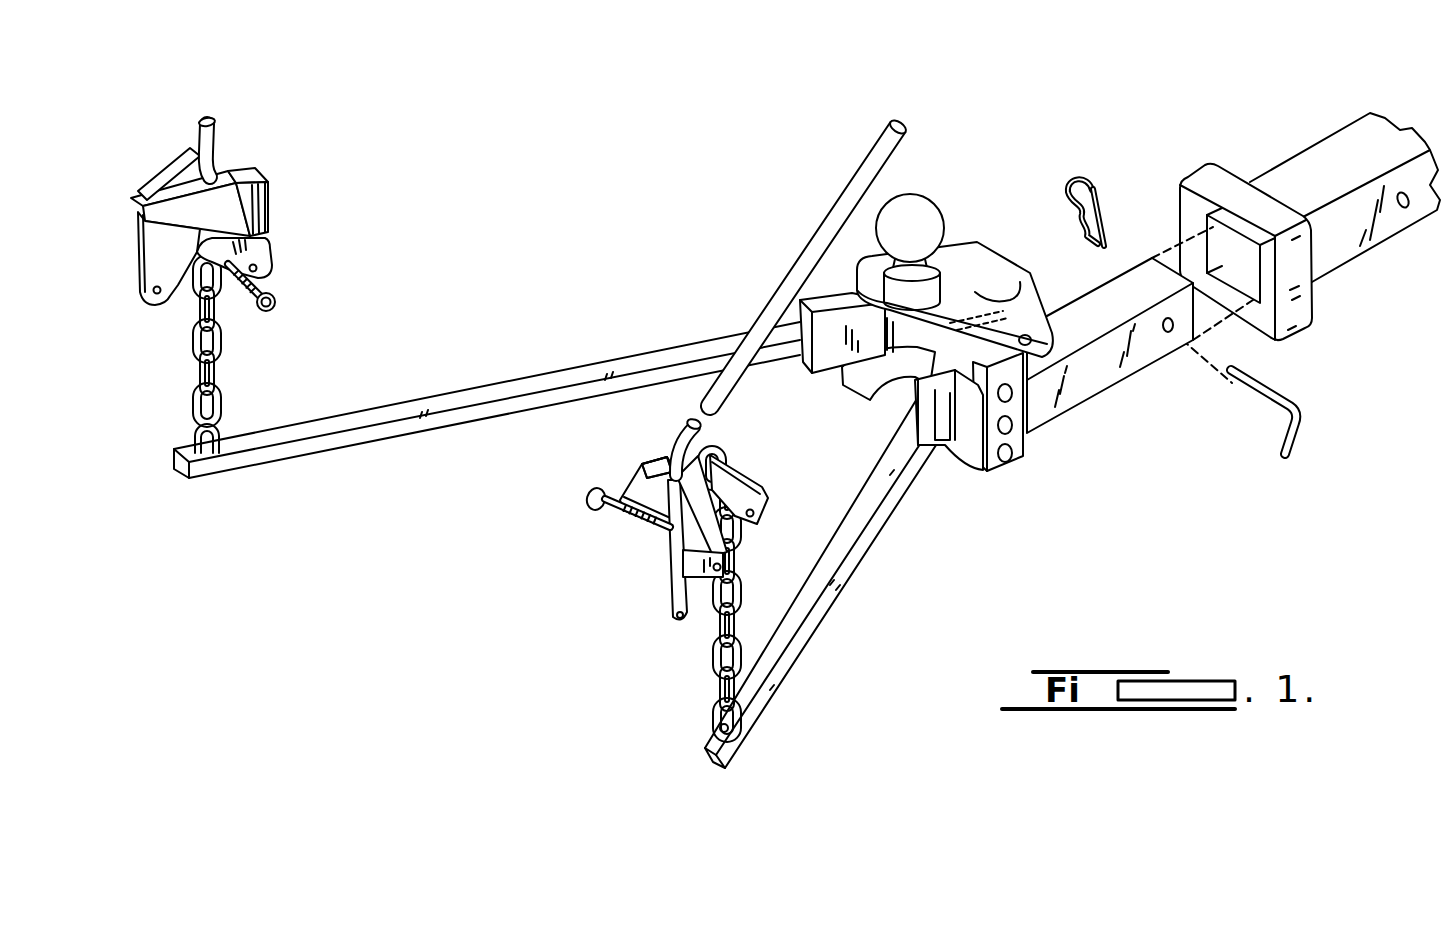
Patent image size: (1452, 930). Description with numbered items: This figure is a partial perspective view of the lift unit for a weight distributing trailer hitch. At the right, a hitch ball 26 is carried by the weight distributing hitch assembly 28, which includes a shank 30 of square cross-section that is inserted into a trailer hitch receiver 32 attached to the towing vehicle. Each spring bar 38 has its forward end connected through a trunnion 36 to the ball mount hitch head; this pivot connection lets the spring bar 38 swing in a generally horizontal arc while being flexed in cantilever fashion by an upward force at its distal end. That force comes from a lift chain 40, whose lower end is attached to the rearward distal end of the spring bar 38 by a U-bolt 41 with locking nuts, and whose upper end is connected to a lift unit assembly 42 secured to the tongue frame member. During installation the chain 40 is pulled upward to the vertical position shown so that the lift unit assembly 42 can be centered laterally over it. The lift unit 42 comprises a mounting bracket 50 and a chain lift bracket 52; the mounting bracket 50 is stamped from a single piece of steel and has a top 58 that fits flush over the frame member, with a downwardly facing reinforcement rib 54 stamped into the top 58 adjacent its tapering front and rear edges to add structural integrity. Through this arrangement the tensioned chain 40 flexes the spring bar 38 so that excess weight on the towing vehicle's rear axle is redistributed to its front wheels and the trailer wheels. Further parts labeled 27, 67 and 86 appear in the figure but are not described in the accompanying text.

The hitch ball 26 is at (920, 212).
The ball mount plate 27 is at (977, 325).
The weight distributing hitch assembly 28 is at (1034, 285).
The shank 30 is at (1092, 388).
The trailer hitch receiver 32 is at (1283, 158).
The trunnion 36 is at (833, 362).
The spring bar 38 is at (443, 400).
The lift chain 40 is at (222, 372).
The U-bolt 41 is at (218, 442).
The lift unit assembly 42 is at (275, 173).
The mounting bracket 50 is at (175, 290).
The chain lift bracket 52 is at (235, 162).
The reinforcement rib 54 is at (255, 243).
The top 58 is at (233, 207).
The adjustment bolt 67 is at (267, 293).
The lift rod 86 is at (864, 167).